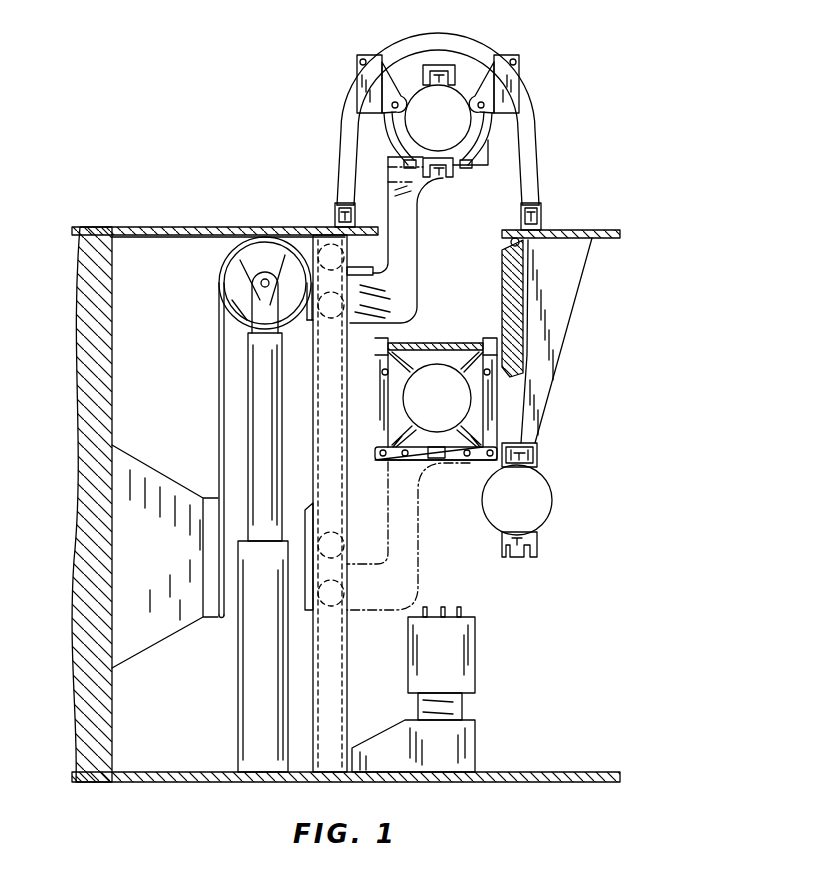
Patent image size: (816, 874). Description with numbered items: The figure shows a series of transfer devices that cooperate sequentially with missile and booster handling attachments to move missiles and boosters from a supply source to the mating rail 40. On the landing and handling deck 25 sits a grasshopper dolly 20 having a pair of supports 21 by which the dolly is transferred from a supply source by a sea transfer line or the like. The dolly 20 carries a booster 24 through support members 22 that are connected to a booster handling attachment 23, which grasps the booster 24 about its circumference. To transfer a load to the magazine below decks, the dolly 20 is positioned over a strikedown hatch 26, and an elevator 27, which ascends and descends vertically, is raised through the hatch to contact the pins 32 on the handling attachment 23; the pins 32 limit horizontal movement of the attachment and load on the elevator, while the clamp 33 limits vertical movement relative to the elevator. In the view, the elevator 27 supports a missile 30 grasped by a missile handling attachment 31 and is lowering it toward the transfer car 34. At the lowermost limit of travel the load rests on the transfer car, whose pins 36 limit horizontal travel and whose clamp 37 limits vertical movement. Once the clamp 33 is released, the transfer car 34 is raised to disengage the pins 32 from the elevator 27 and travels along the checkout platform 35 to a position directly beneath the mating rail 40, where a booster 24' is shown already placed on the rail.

The grasshopper dolly 20 is at (478, 43).
The supports 21 is at (362, 61).
The support members 22 is at (378, 102).
The booster handling attachment 23 is at (484, 151).
The booster 24 is at (438, 108).
The booster 24' is at (538, 511).
The landing and handling deck 25 is at (258, 227).
The strikedown hatch 26 is at (502, 286).
The elevator 27 is at (406, 210).
The missile 30 is at (447, 394).
The missile handling attachment 31 is at (376, 424).
The pins 32 is at (464, 160).
The clamp 33 is at (446, 175).
The transfer car 34 is at (450, 655).
The checkout platform 35 is at (523, 771).
The pins 36 is at (425, 606).
The clamp 37 is at (443, 606).
The mating rail 40 is at (533, 447).